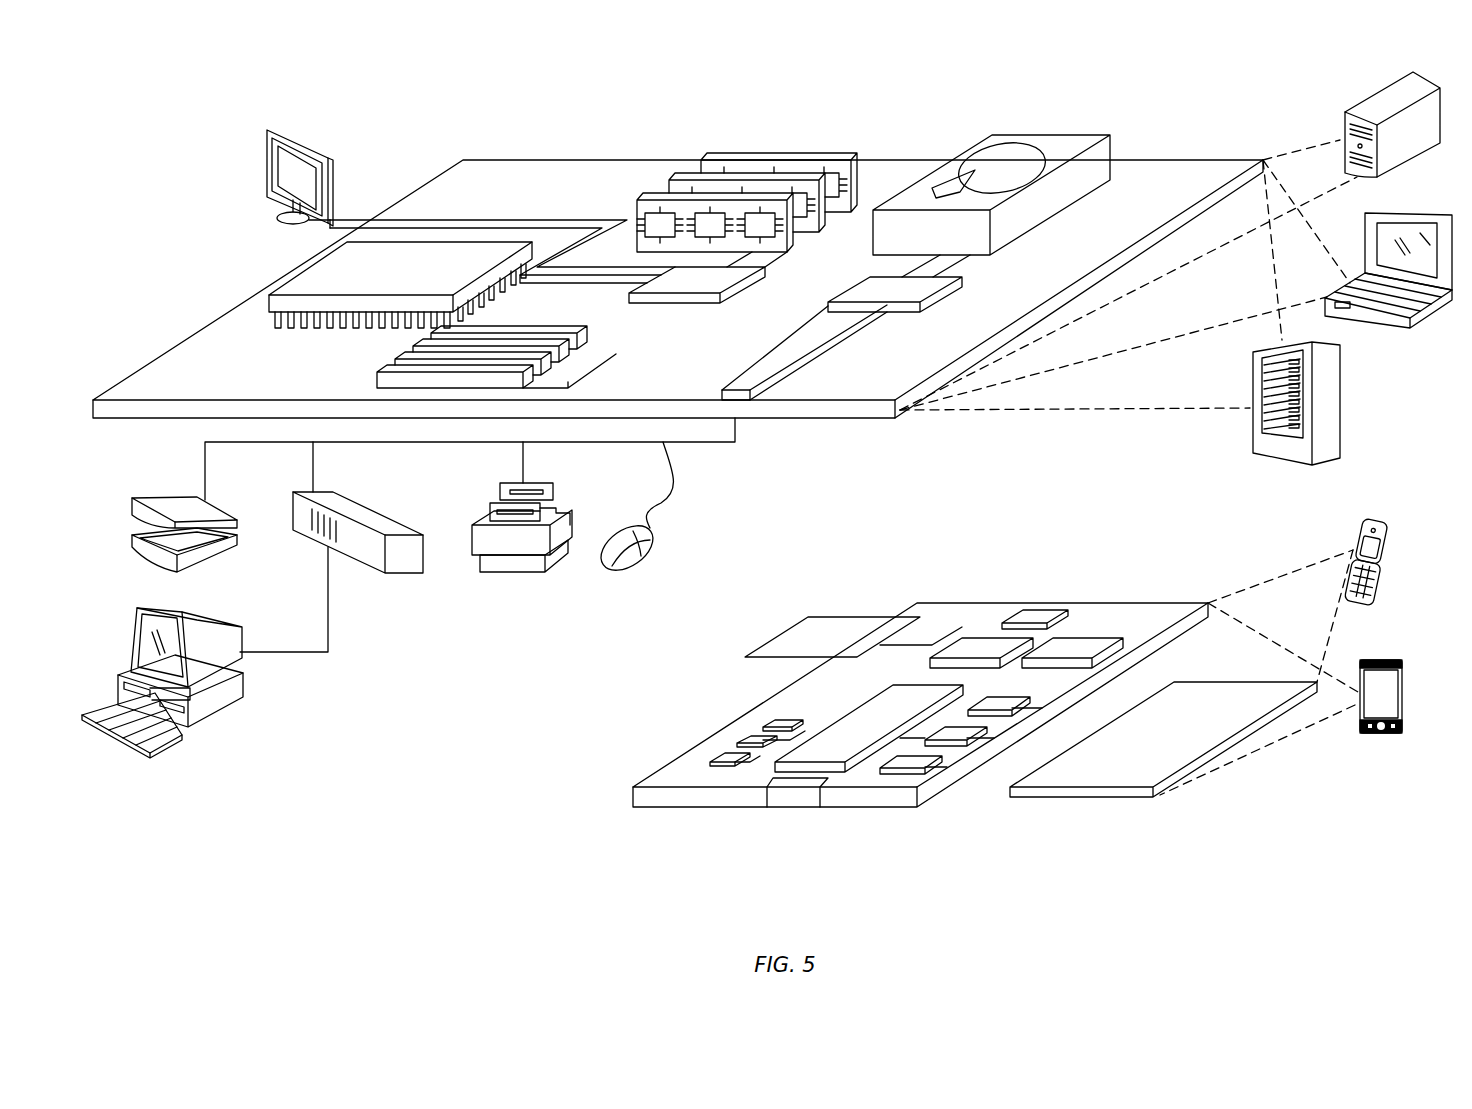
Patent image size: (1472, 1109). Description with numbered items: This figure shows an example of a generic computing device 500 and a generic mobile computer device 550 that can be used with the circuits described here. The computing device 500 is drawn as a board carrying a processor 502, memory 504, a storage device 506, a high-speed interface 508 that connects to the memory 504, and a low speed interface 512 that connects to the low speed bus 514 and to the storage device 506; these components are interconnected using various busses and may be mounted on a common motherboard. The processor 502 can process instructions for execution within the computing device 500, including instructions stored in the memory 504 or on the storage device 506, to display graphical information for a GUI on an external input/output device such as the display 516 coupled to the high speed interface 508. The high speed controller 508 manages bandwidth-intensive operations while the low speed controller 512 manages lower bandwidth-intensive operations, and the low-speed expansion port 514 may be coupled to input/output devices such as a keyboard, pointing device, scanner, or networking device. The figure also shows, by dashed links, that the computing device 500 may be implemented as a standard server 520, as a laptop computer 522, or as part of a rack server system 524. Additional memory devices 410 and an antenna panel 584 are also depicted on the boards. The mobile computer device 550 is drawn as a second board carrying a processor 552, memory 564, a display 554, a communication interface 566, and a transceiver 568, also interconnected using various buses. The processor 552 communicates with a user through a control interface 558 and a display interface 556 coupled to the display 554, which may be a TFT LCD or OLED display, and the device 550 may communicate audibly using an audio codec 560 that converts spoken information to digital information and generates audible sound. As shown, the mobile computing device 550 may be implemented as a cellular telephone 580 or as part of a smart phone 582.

The computing device 500 is at (413, 110).
The processor 502 is at (294, 275).
The memory 504 is at (784, 150).
The memory devices 410 is at (407, 358).
The storage device 506 is at (1036, 132).
The high-speed interface 508 is at (708, 278).
The low speed interface 512 is at (866, 288).
The low speed bus 514 is at (743, 382).
The display 516 is at (271, 128).
The standard server 520 is at (1368, 100).
The laptop computer 522 is at (1428, 213).
The rack server system 524 is at (1340, 401).
The mobile computer device 550 is at (1248, 797).
The processor 552 is at (837, 733).
The display 554 is at (1202, 698).
The display interface 556 is at (920, 760).
The control interface 558 is at (962, 730).
The audio codec 560 is at (1005, 700).
The memory 564 is at (745, 737).
The communication interface 566 is at (980, 640).
The transceiver 568 is at (1080, 640).
The cellular telephone 580 is at (1037, 613).
The smart phone 582 is at (897, 615).
The antenna panel 584 is at (808, 617).